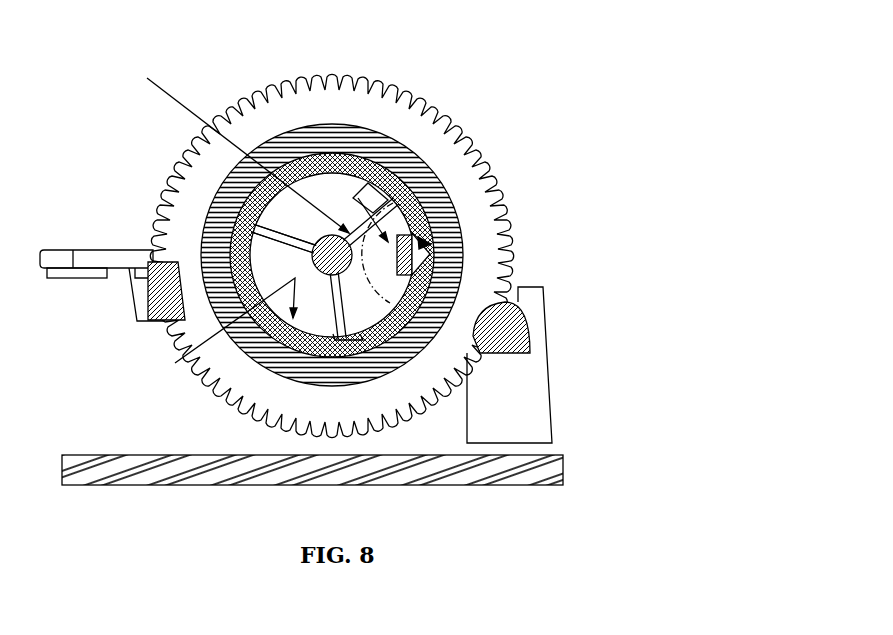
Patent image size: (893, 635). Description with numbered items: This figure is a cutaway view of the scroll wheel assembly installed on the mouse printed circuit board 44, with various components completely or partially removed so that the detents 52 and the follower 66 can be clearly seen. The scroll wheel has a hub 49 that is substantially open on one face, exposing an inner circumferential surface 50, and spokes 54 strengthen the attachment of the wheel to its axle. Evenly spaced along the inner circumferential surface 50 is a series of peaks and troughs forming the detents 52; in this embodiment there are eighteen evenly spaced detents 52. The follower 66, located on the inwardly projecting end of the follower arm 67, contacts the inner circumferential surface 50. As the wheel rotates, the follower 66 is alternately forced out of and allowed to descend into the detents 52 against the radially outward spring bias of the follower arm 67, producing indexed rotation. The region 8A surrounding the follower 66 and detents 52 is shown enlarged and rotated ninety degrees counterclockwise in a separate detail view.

The region 8A is at (250, 157).
The hub 49 is at (338, 157).
The follower 66 is at (460, 233).
The follower arm 67 is at (358, 198).
The inner circumferential surface 50 is at (222, 330).
The detents 52 is at (222, 330).
The spokes 54 is at (342, 306).
The printed circuit board 44 is at (77, 488).